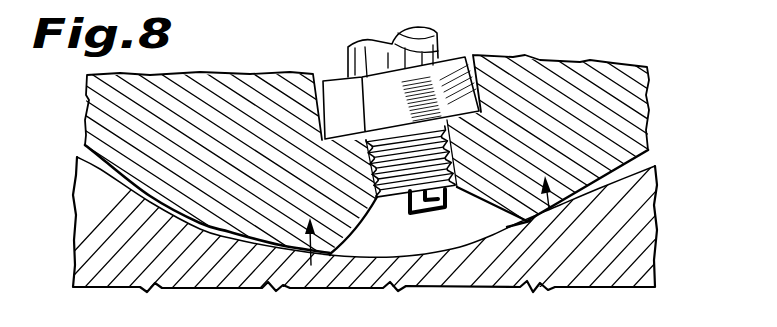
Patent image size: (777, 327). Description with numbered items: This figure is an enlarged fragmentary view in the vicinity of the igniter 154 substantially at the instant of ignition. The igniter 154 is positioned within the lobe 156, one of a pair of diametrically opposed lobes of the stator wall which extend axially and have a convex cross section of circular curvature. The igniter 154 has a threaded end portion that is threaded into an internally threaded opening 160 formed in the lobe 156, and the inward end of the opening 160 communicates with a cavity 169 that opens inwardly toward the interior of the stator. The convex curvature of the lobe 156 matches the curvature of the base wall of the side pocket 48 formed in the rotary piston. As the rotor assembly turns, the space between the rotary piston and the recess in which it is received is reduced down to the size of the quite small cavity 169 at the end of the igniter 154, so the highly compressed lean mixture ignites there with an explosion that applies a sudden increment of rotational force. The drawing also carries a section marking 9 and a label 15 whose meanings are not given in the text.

The side pocket 48 is at (470, 207).
The lobe 156 is at (217, 218).
The igniter 154 is at (438, 51).
The bolt shank bore 15 is at (367, 166).
The internally threaded opening 160 is at (452, 136).
The cavity 169 is at (508, 226).
The load direction arrow 9 is at (424, 230).